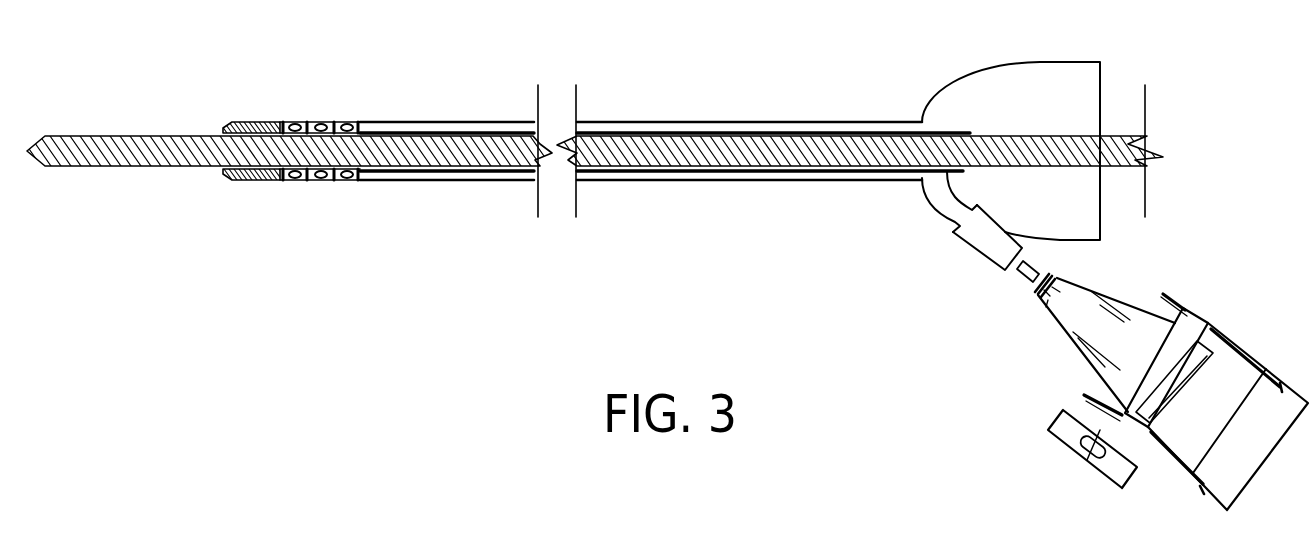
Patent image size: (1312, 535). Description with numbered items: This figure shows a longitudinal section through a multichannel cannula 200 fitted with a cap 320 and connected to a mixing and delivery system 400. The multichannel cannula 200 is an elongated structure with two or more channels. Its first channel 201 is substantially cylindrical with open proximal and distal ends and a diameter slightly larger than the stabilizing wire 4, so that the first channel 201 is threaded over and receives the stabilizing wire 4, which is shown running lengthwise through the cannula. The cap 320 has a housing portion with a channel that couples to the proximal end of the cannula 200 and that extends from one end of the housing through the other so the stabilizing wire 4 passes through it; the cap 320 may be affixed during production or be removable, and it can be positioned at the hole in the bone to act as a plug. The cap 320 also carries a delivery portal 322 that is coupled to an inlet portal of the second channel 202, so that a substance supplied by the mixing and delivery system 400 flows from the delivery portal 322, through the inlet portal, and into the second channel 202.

The multichannel cannula 200 is at (790, 47).
The stabilizing wire 4 is at (622, 146).
The first channel 201 is at (730, 170).
The second channel 202 is at (633, 170).
The cap 320 is at (1032, 78).
The delivery portal 322 is at (987, 245).
The mixing and delivery system 400 is at (1032, 478).